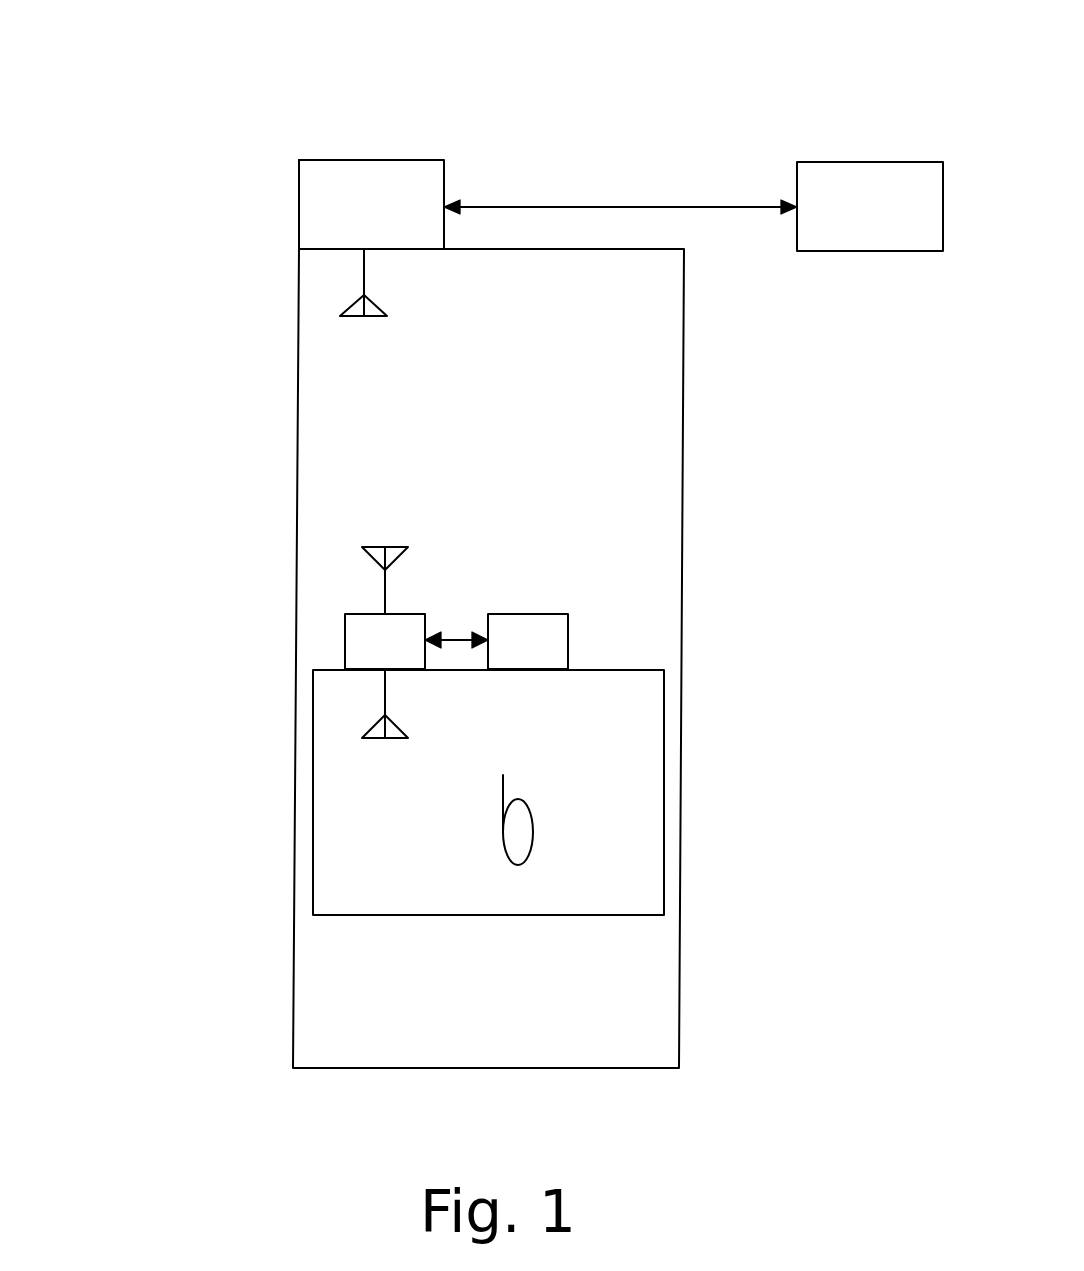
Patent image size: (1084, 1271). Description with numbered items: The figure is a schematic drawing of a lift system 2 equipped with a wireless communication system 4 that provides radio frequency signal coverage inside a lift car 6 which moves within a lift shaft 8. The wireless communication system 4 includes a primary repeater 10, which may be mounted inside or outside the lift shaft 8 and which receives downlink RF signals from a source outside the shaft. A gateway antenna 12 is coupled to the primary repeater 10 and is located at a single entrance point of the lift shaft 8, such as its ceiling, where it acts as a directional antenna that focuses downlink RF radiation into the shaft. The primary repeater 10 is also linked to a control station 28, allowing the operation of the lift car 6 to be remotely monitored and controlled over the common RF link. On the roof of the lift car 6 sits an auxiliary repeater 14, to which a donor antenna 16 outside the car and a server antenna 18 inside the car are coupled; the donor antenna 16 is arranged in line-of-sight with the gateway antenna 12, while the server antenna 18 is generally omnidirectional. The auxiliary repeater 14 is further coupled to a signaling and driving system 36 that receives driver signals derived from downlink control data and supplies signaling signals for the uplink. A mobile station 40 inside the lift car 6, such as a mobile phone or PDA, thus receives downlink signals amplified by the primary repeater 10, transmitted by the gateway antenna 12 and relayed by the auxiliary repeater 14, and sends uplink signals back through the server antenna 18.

The lift system 2 is at (185, 92).
The wireless communication system 4 is at (315, 443).
The lift car 6 is at (664, 735).
The lift shaft 8 is at (620, 405).
The primary repeater 10 is at (432, 160).
The gateway antenna 12 is at (343, 315).
The auxiliary repeater 14 is at (345, 648).
The donor antenna 16 is at (385, 568).
The server antenna 18 is at (368, 735).
The control station 28 is at (877, 251).
The signaling and driving system 36 is at (537, 614).
The mobile station 40 is at (516, 821).